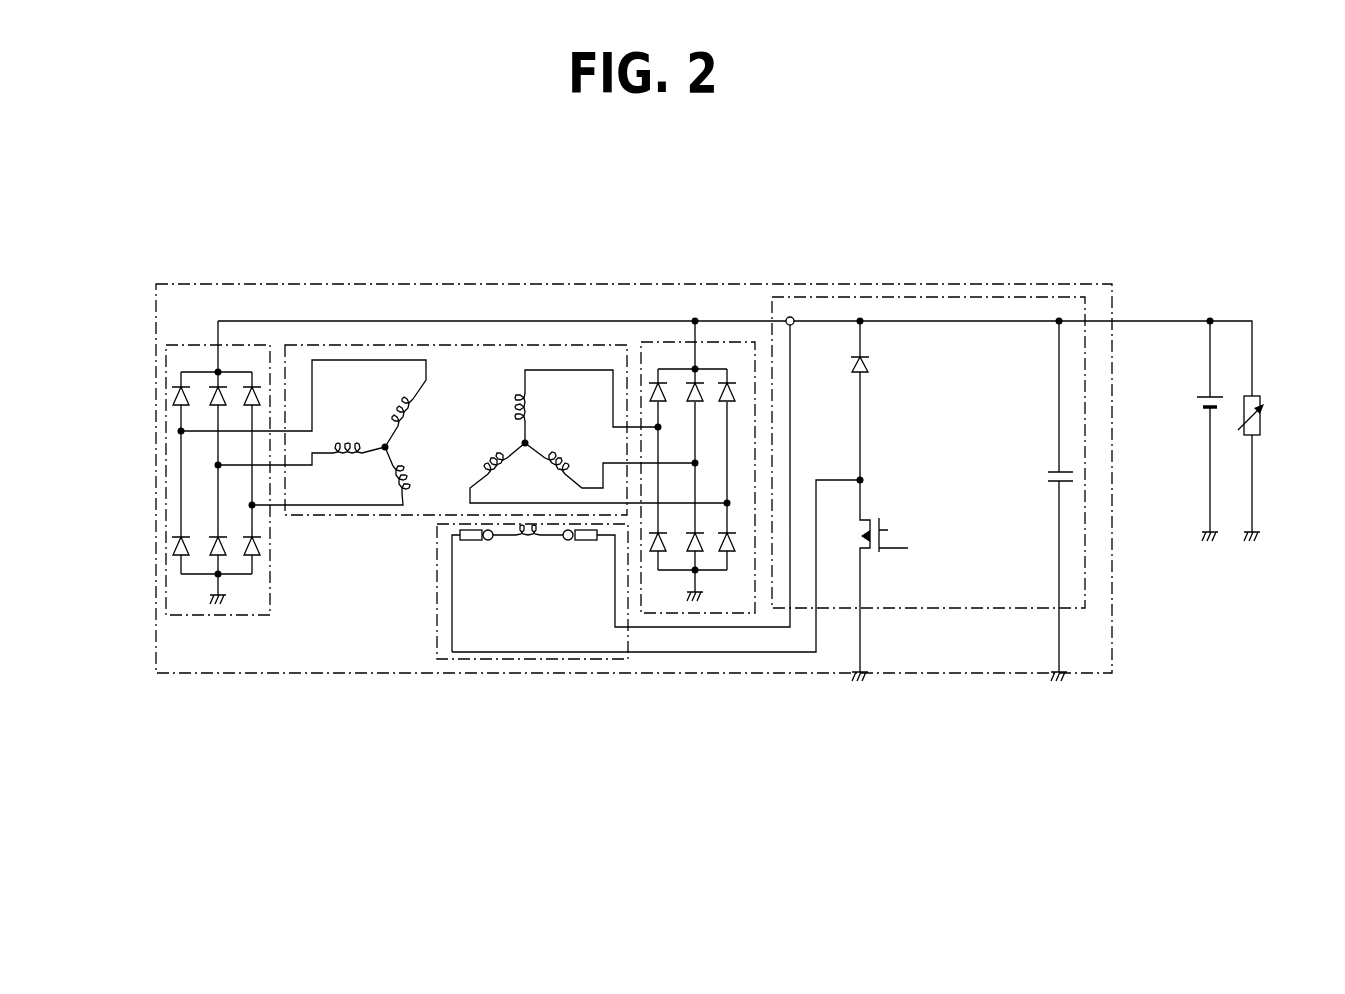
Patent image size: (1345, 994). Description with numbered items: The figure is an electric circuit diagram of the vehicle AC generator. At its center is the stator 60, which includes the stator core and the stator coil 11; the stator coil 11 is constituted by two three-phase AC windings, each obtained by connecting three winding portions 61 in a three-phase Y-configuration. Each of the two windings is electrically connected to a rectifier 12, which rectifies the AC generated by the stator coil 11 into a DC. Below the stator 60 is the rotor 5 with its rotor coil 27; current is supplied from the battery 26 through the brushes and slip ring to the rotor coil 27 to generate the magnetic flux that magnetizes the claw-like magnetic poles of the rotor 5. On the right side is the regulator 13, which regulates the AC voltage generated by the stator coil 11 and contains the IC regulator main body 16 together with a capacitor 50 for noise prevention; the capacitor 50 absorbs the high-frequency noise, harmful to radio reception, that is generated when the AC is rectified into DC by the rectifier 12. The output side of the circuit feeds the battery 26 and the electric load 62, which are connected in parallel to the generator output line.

The rotor 5 is at (437, 600).
The stator coil 11 is at (398, 394).
The rectifier 12 is at (233, 616).
The regulator 13 is at (928, 297).
The IC regulator main body 16 is at (888, 530).
The battery 26 is at (1197, 405).
The rotor coil 27 is at (533, 540).
The capacitor 50 is at (1078, 474).
The stator 60 is at (460, 345).
The winding portions 61 is at (454, 365).
The electric load 62 is at (1260, 420).